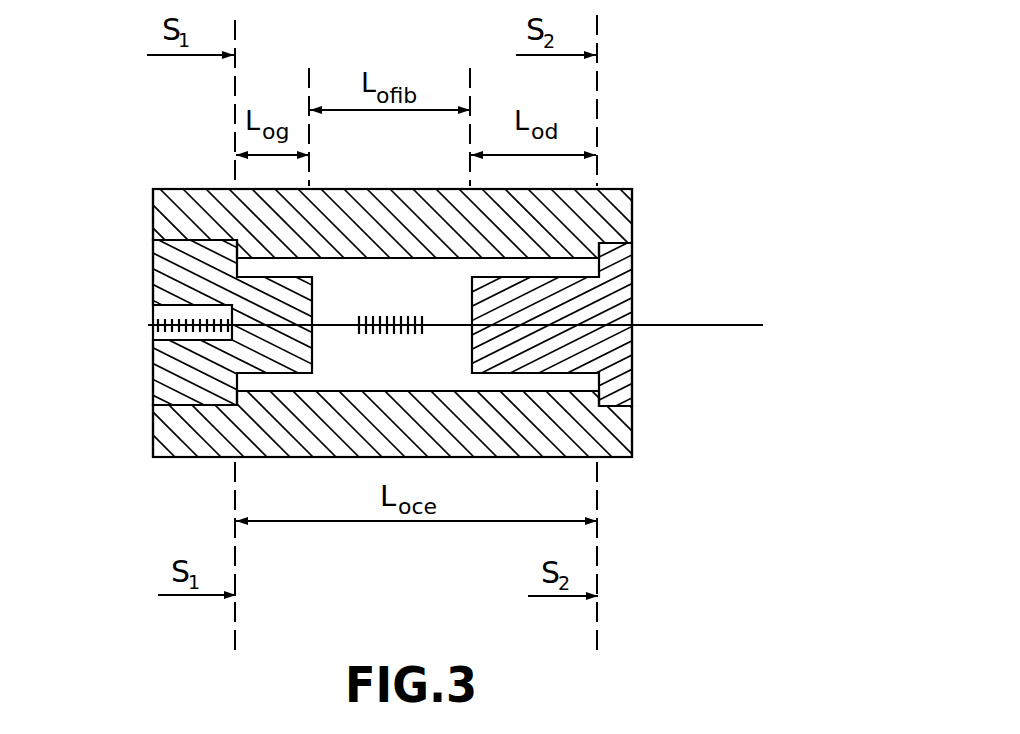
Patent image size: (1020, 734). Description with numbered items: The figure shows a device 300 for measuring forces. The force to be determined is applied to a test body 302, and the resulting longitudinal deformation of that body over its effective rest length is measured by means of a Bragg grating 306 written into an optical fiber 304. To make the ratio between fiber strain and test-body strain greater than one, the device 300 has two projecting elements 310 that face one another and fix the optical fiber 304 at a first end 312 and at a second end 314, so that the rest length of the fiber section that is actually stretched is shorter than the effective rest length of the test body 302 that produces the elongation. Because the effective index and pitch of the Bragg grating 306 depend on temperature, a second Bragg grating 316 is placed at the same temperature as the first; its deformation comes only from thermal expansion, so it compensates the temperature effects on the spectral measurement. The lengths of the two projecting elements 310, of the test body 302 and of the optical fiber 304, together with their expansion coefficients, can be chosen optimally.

The device for measuring forces 300 is at (633, 155).
The test body 302 is at (412, 198).
The optical fiber 304 is at (707, 326).
The Bragg grating 306 is at (397, 313).
The projecting elements 310 is at (470, 362).
The first end 312 is at (313, 323).
The second end 314 is at (470, 323).
The second Bragg grating 316 is at (153, 327).